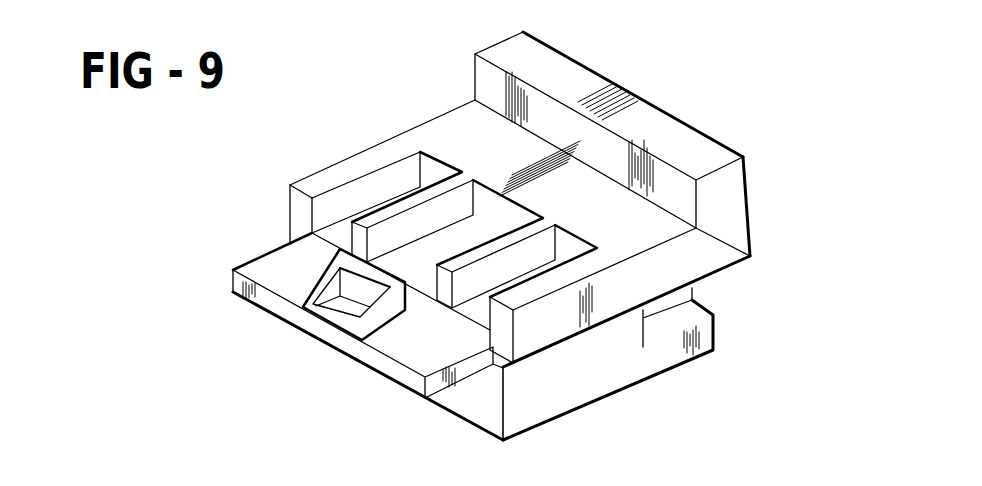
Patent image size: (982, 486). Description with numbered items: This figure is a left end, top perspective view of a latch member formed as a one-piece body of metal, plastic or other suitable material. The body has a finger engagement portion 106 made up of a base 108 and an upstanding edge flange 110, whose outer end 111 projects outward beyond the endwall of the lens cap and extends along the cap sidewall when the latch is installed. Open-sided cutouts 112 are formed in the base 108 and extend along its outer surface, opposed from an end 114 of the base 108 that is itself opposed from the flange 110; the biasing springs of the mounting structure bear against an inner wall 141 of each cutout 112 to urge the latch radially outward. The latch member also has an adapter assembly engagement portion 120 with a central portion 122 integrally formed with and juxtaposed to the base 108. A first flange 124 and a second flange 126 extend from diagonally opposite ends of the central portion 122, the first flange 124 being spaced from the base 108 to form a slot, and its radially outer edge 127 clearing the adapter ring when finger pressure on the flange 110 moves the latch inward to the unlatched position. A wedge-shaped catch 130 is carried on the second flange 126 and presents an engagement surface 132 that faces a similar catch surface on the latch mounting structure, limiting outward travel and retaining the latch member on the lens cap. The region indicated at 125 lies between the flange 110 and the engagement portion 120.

The finger engagement portion 106 is at (412, 133).
The base 108 is at (507, 142).
The upstanding edge flange 110 is at (640, 118).
The outer end 111 is at (577, 74).
The open-sided cutouts 112 is at (398, 233).
The end 114 is at (300, 208).
The adapter assembly engagement portion 120 is at (613, 397).
The central portion 122 is at (548, 390).
The first flange 124 is at (706, 341).
The notch 125 is at (704, 284).
The second flange 126 is at (280, 272).
The radially outer edge 127 is at (717, 334).
The wedge-shaped catch 130 is at (396, 318).
The engagement surface 132 is at (422, 312).
The inner wall 141 is at (470, 283).